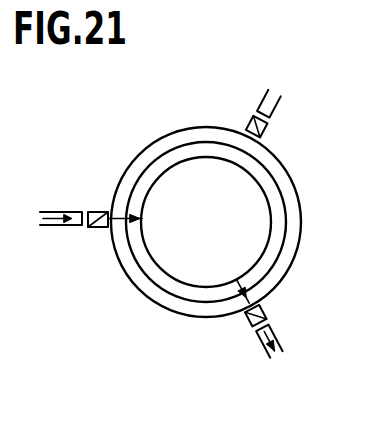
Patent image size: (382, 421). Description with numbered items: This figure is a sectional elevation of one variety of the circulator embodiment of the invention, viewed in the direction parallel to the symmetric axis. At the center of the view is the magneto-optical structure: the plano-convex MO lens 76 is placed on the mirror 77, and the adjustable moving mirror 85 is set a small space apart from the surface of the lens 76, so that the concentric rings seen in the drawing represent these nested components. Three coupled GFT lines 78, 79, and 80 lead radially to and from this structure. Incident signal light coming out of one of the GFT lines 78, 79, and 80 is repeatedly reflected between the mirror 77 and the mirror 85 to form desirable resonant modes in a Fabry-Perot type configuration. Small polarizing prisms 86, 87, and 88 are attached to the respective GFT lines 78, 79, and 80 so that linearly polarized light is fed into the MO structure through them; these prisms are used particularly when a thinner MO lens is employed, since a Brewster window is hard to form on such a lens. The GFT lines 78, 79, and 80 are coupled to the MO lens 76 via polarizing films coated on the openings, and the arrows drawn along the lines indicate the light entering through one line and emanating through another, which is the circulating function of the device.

The plano-convex MO lens 76 is at (145, 182).
The mirror 77 is at (152, 146).
The GFT line 78 is at (63, 226).
The GFT line 79 is at (282, 342).
The GFT line 80 is at (280, 108).
The adjustable moving mirror 85 is at (198, 172).
The polarizing prism 86 is at (100, 228).
The polarizing prism 87 is at (267, 310).
The polarizing prism 88 is at (265, 130).